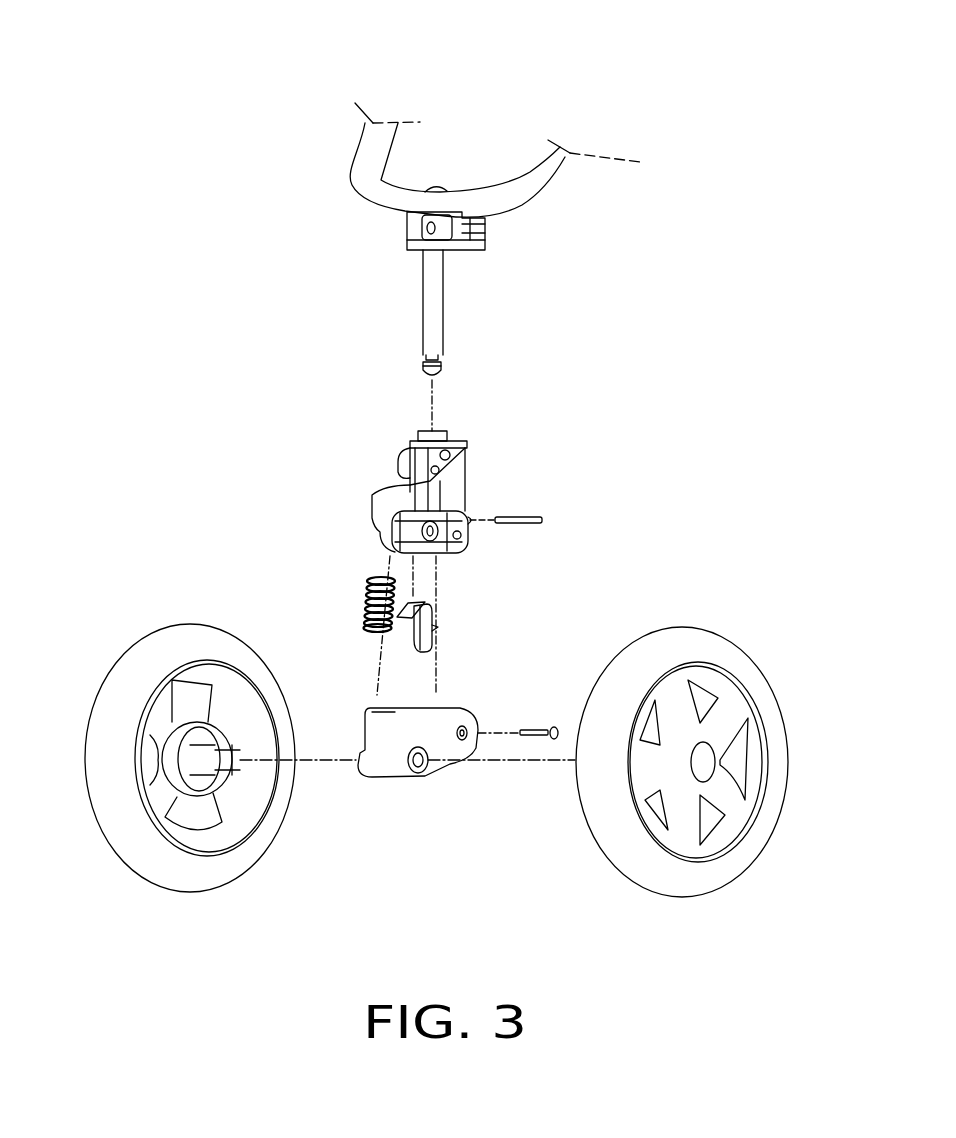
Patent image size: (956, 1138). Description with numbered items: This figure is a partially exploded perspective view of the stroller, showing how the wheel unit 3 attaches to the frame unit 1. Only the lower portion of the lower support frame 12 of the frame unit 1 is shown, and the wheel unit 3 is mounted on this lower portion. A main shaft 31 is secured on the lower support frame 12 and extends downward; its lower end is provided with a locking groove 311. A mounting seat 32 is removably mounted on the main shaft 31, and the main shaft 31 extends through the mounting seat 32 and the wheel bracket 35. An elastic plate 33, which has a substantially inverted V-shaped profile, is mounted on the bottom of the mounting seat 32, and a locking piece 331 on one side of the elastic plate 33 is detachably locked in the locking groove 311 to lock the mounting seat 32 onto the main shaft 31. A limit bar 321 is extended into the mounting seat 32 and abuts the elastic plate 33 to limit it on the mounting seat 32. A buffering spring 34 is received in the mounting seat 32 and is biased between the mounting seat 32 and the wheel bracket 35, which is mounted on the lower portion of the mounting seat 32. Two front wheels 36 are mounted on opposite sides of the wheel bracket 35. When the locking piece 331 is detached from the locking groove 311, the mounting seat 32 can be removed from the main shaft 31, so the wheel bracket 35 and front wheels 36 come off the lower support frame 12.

The frame unit 1 is at (326, 114).
The lower support frame 12 is at (370, 180).
The wheel unit 3 is at (282, 343).
The main shaft 31 is at (430, 300).
The locking groove 311 is at (428, 357).
The mounting seat 32 is at (450, 487).
The limit bar 321 is at (535, 517).
The elastic plate 33 is at (474, 626).
The locking piece 331 is at (440, 628).
The buffering spring 34 is at (365, 608).
The wheel bracket 35 is at (400, 768).
The front wheels 36 is at (247, 850).